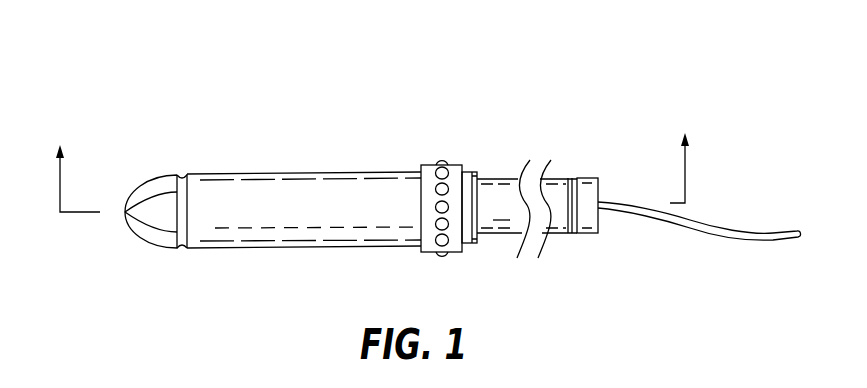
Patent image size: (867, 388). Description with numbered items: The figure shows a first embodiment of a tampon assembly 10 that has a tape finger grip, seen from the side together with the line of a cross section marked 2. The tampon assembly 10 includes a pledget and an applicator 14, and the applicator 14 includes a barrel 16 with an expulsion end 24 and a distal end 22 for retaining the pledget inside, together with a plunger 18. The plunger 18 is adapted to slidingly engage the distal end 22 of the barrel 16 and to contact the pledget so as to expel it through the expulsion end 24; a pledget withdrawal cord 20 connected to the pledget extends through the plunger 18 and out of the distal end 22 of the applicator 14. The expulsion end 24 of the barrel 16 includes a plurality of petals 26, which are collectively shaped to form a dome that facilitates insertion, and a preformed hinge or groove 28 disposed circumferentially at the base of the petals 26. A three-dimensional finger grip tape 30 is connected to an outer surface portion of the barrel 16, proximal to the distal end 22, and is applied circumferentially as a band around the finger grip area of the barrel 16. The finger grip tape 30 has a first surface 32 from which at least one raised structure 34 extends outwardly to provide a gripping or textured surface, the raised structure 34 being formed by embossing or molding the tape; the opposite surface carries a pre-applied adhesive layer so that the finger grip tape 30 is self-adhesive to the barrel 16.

The section line 2- 2 is at (373, 161).
The tampon assembly 10 is at (268, 80).
The applicator 14 is at (488, 160).
The barrel 16 is at (215, 173).
The plunger 18 is at (587, 233).
The pledget withdrawal cord 20 is at (725, 225).
The distal end 22 is at (494, 261).
The expulsion end 24 is at (120, 256).
The petals 26 is at (150, 250).
The preformed hinge or groove 28 is at (183, 250).
The finger grip tape 30 is at (416, 262).
The first surface 32 is at (455, 243).
The raised structure 34 is at (443, 258).